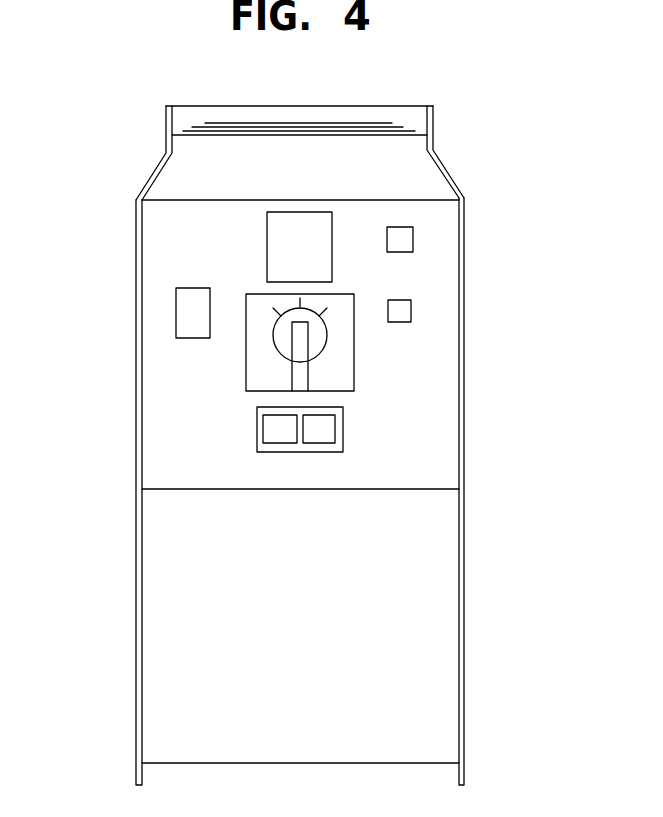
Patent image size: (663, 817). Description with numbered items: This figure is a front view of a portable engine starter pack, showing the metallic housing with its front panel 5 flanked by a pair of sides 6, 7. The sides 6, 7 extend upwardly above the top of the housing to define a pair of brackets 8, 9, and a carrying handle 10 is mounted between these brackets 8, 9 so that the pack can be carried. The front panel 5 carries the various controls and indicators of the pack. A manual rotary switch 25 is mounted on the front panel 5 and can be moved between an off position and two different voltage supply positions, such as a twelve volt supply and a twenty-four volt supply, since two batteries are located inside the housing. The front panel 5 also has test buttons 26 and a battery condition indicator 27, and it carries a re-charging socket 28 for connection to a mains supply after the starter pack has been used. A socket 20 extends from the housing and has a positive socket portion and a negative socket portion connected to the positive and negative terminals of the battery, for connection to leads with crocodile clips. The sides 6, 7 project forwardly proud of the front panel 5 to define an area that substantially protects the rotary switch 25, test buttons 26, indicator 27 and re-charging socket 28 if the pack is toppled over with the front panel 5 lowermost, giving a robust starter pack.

The front panel 5 is at (433, 450).
The side 6 is at (136, 560).
The side 7 is at (465, 560).
The bracket 8 is at (155, 172).
The bracket 9 is at (433, 135).
The carrying handle 10 is at (378, 107).
The socket 20 is at (262, 425).
The manual rotary switch 25 is at (305, 373).
The test buttons 26 is at (404, 240).
The battery condition indicator 27 is at (274, 237).
The re-charging socket 28 is at (180, 316).